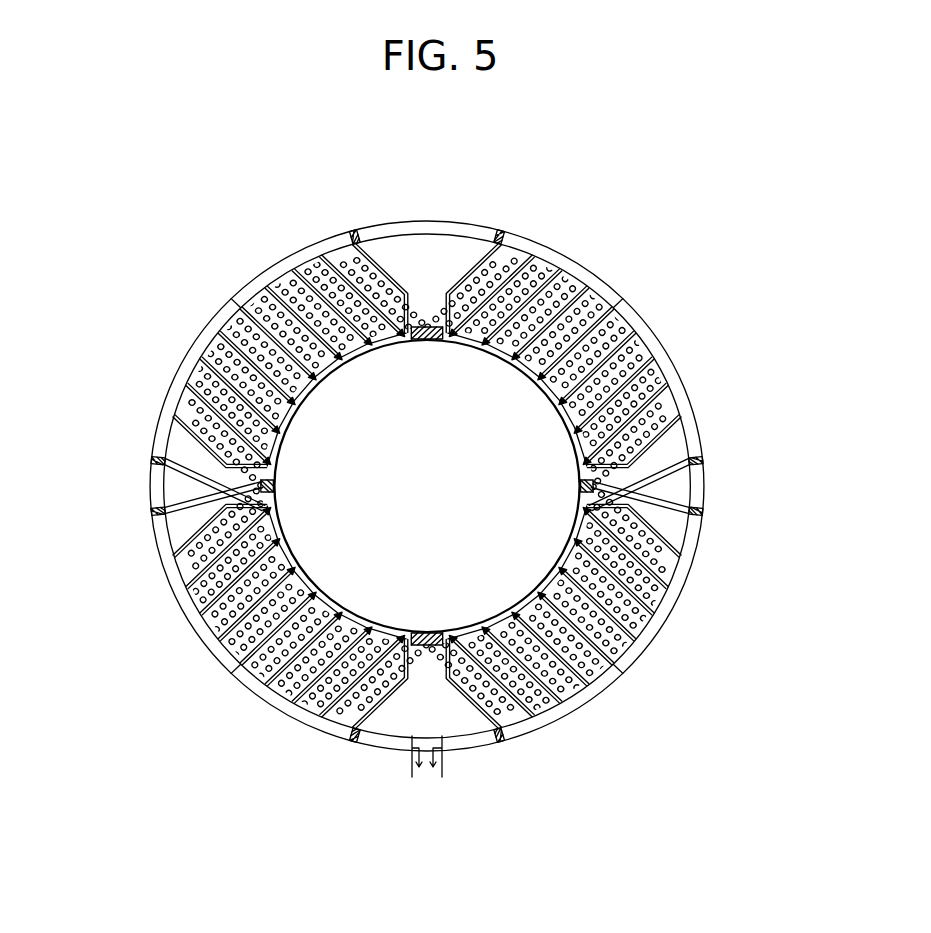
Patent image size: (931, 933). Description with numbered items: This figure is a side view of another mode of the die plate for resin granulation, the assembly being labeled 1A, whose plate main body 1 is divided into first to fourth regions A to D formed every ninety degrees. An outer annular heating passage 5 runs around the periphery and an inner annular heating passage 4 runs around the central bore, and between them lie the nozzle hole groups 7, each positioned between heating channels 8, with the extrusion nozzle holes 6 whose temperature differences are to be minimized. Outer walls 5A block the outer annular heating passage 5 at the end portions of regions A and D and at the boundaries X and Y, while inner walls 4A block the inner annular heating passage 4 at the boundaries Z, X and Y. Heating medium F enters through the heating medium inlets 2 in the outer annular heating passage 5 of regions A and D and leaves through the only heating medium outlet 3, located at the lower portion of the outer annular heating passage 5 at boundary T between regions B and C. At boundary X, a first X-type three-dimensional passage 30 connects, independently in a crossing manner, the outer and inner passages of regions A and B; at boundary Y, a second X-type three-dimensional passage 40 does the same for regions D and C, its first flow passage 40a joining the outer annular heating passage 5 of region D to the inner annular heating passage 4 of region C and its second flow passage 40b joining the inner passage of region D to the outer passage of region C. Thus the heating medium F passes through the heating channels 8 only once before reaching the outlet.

The plate main body 1 is at (426, 485).
The stator 1A is at (434, 508).
The heating medium inlet 2 is at (427, 486).
The heating medium outlet 3 is at (450, 775).
The inner annular heating passage 4 is at (426, 486).
The inner wall 4A is at (583, 487).
The outer annular heating passage 5 is at (426, 485).
The outer wall 5A is at (426, 486).
The extrusion nozzle hole 6 is at (564, 354).
The nozzle hole group 7 is at (563, 356).
The heating channel 8 is at (427, 486).
The first X-type three-dimensional passage 30 is at (639, 486).
The second X-type three-dimensional passage 40 is at (214, 486).
The first flow passage 40a is at (214, 485).
The second flow passage 40b is at (213, 498).